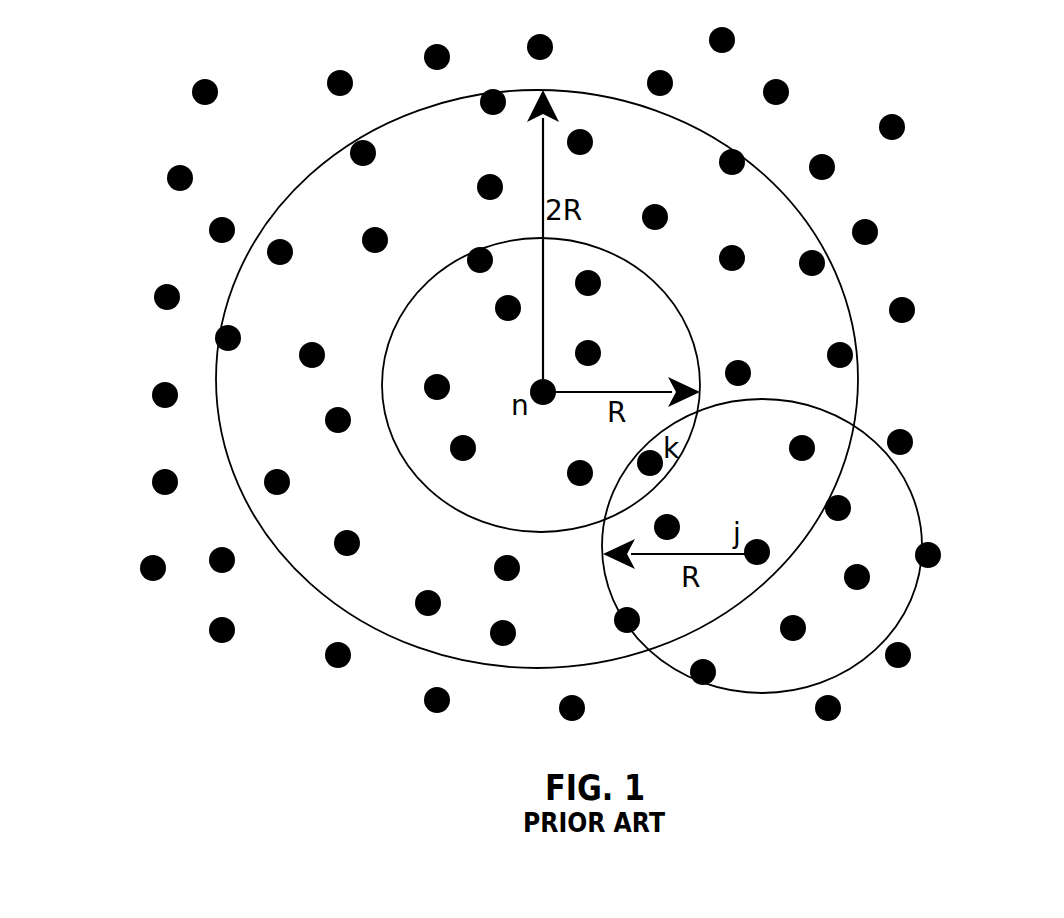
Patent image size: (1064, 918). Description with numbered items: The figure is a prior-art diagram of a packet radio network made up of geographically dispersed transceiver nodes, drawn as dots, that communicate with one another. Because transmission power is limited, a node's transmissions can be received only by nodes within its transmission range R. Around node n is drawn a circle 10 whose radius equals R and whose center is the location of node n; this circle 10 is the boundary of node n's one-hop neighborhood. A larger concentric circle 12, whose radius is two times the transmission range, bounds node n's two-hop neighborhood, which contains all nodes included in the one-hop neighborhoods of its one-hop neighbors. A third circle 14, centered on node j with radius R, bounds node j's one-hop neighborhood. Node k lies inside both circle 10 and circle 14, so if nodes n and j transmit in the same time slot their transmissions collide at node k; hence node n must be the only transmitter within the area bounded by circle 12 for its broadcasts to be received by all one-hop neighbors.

The circle 10 is at (683, 323).
The circle 12 is at (858, 383).
The circle 14 is at (907, 607).